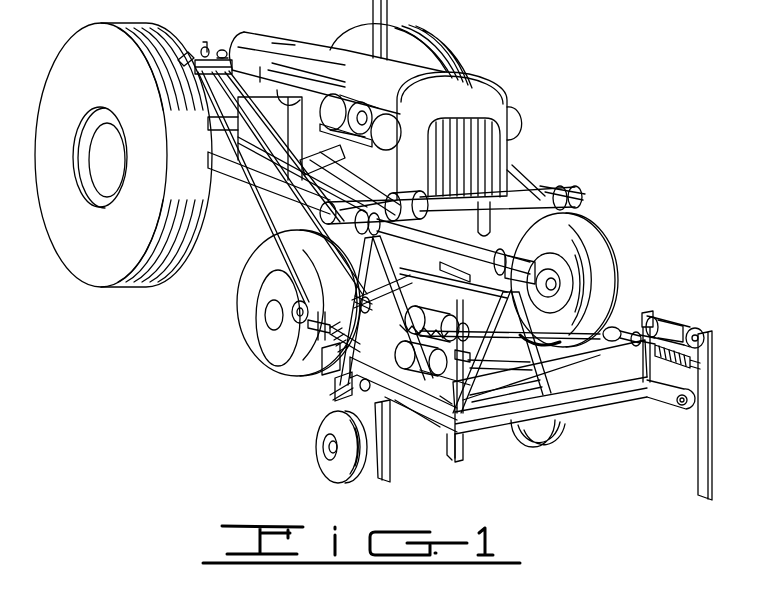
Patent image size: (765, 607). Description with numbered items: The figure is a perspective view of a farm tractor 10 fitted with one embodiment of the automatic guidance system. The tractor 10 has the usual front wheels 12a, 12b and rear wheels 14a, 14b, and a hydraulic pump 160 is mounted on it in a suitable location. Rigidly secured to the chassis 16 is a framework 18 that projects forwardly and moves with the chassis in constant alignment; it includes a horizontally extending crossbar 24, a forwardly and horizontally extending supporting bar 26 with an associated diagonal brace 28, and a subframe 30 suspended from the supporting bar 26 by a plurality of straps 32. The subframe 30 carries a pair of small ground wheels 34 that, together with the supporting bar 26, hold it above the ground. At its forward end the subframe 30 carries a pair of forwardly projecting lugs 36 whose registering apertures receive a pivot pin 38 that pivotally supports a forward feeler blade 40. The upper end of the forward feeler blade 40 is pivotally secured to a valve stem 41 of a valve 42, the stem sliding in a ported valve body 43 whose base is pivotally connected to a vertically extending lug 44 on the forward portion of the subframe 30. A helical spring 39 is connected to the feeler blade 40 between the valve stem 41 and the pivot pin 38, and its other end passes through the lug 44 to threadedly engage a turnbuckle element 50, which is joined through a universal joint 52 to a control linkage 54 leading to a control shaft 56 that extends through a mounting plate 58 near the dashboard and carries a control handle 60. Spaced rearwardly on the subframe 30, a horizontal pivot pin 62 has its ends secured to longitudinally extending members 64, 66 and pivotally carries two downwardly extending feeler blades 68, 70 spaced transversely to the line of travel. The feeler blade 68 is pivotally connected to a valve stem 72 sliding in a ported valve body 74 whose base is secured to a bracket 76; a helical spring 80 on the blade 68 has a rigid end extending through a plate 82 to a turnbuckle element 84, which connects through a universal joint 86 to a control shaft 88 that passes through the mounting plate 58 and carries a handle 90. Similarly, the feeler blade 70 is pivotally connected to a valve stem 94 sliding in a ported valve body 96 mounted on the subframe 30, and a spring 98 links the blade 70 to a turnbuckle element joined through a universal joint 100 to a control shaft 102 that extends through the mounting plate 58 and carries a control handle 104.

The farm tractor 10 is at (497, 72).
The front wheel 12a is at (255, 362).
The front wheel 12b is at (605, 262).
The rear wheel 14a is at (72, 247).
The rear wheel 14b is at (415, 36).
The chassis 16 is at (232, 172).
The framework 18 is at (555, 173).
The crossbar 24 is at (570, 188).
The supporting bar 26 is at (515, 262).
The diagonal brace 28 is at (512, 193).
The subframe 30 is at (585, 418).
The straps 32 is at (340, 280).
The ground wheels 34 is at (330, 465).
The lugs 36 is at (660, 405).
The pivot pin 38 is at (680, 410).
The helical spring 39 is at (685, 365).
The forward feeler blade 40 is at (708, 470).
The valve stem 41 is at (705, 345).
The valve 42 is at (700, 328).
The ported valve body 43 is at (682, 320).
The vertically extending lug 44 is at (648, 313).
The turnbuckle element 50 is at (645, 342).
The universal joint 52 is at (618, 328).
The control linkage 54 is at (570, 345).
The control shaft 56 is at (312, 178).
The mounting plate 58 is at (198, 78).
The control handle 60 is at (222, 50).
The pivot pin 62 is at (328, 420).
The longitudinally extending member 64 is at (445, 437).
The longitudinally extending member 66 is at (503, 430).
The feeler blade 68 is at (380, 478).
The feeler blade 70 is at (457, 462).
The valve stem 72 is at (405, 390).
The ported valve body 74 is at (425, 416).
The bracket 76 is at (448, 404).
The helical spring 80 is at (318, 398).
The plate 82 is at (318, 365).
The turnbuckle element 84 is at (308, 333).
The universal joint 86 is at (297, 315).
The control shaft 88 is at (262, 205).
The handle 90 is at (190, 58).
The valve stem 94 is at (455, 318).
The ported valve body 96 is at (425, 312).
The spring 98 is at (475, 352).
The universal joint 100 is at (358, 302).
The control shaft 102 is at (270, 222).
The control handle 104 is at (205, 42).
The hydraulic pump 160 is at (394, 98).